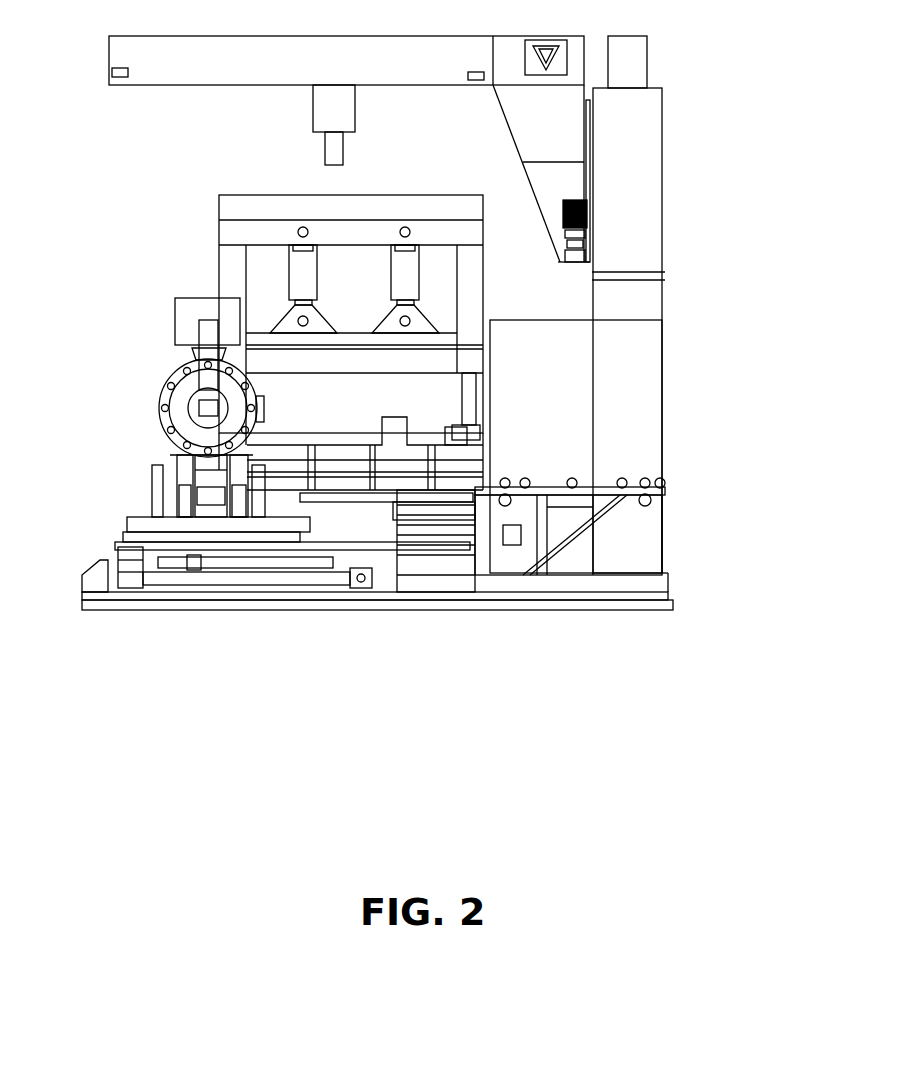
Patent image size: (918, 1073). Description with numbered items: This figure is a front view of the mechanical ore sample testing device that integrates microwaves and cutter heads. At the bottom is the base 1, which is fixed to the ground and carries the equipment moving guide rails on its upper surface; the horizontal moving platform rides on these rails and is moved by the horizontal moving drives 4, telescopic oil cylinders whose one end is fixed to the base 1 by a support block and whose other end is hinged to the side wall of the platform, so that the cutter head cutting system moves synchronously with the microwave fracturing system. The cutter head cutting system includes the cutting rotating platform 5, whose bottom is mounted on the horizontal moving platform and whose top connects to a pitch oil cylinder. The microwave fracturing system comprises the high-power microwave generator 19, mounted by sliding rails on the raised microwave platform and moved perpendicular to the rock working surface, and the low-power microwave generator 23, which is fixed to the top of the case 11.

The base 1 is at (340, 605).
The horizontal moving drive 4 is at (195, 600).
The cutting rotating platform 5 is at (140, 600).
The case 11 is at (165, 437).
The high-power microwave generator 19 is at (643, 413).
The low-power microwave generator 23 is at (190, 307).